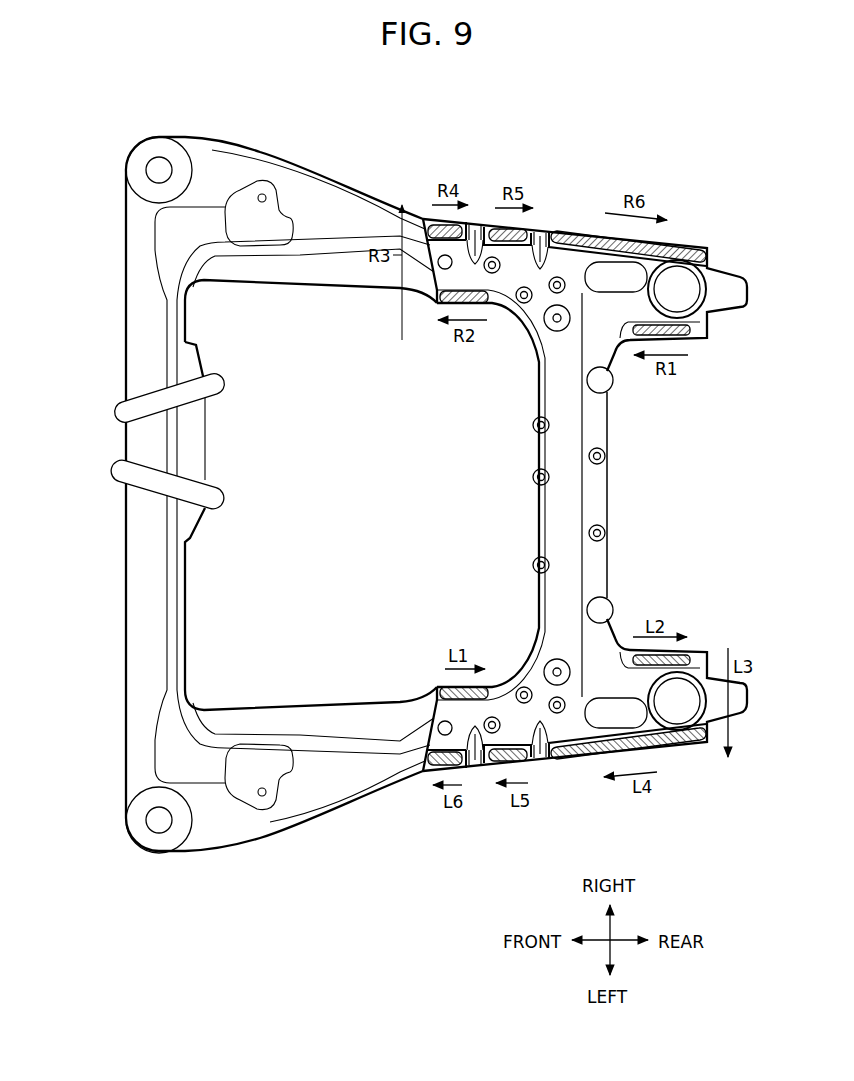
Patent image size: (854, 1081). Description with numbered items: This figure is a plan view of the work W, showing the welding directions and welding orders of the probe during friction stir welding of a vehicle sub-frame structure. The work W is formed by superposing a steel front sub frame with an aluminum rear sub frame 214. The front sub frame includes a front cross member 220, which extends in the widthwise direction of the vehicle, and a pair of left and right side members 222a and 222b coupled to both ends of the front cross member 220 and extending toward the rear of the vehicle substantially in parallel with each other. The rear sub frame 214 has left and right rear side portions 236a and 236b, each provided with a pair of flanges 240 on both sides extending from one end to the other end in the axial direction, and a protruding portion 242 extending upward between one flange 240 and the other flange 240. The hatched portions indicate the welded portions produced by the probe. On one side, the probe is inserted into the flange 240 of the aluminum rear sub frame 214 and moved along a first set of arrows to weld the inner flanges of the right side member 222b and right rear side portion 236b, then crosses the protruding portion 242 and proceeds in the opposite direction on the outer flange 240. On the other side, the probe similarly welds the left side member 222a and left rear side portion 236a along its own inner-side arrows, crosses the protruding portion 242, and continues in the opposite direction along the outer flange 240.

The front cross member 220 is at (124, 546).
The rear sub frame 214 is at (613, 480).
The left side member 222a is at (383, 790).
The right side member 222b is at (390, 206).
The flange 240 is at (428, 218).
The protruding portion 242 is at (473, 240).
The left rear side portion 236a is at (566, 727).
The right rear side portion 236b is at (566, 234).
The work W is at (676, 165).